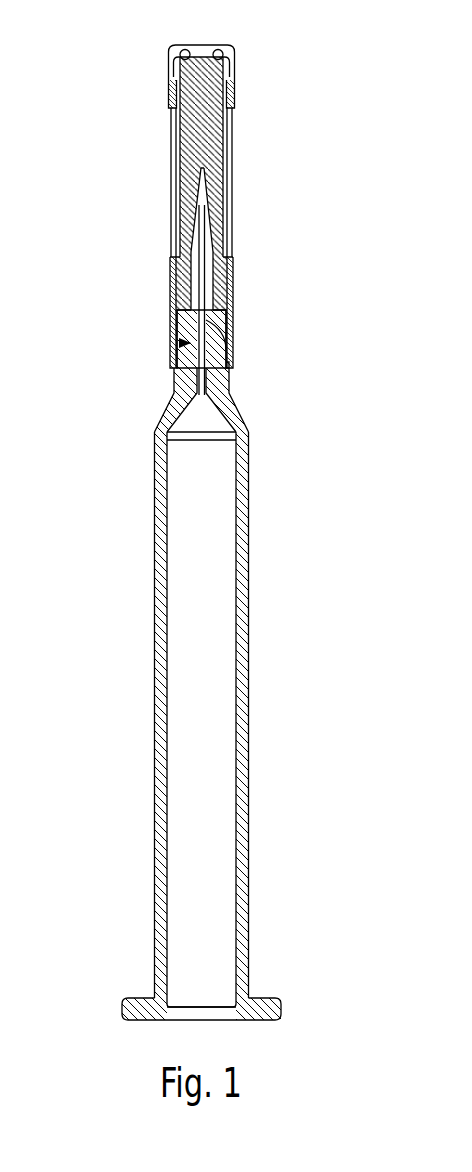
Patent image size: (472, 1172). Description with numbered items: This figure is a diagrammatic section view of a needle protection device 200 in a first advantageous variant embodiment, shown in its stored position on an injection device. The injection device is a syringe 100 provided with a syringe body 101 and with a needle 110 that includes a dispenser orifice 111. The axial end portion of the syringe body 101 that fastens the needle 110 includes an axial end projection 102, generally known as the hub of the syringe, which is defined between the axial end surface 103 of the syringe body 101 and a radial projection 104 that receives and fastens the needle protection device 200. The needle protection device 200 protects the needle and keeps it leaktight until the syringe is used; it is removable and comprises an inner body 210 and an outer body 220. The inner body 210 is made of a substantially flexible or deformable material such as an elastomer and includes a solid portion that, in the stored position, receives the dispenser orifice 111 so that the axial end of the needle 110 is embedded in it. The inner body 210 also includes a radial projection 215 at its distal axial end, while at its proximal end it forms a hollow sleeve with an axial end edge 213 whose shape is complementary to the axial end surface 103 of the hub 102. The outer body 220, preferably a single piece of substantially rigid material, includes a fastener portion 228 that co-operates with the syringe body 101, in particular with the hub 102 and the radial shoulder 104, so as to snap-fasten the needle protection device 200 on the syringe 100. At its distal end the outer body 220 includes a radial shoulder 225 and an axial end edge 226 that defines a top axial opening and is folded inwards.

The syringe 100 is at (255, 668).
The syringe body 101 is at (160, 673).
The axial end projection 102 is at (178, 322).
The axial end surface 103 is at (222, 358).
The radial projection 104 is at (180, 380).
The needle 110 is at (226, 256).
The dispenser orifice 111 is at (208, 168).
The needle protection device 200 is at (246, 283).
The inner body 210 is at (200, 133).
The axial end edge 213 is at (177, 287).
The radial projection 215 is at (222, 62).
The outer body 220 is at (172, 272).
The radial shoulder 225 is at (168, 102).
The axial end edge 226 is at (175, 47).
The fastener portion 228 is at (228, 370).